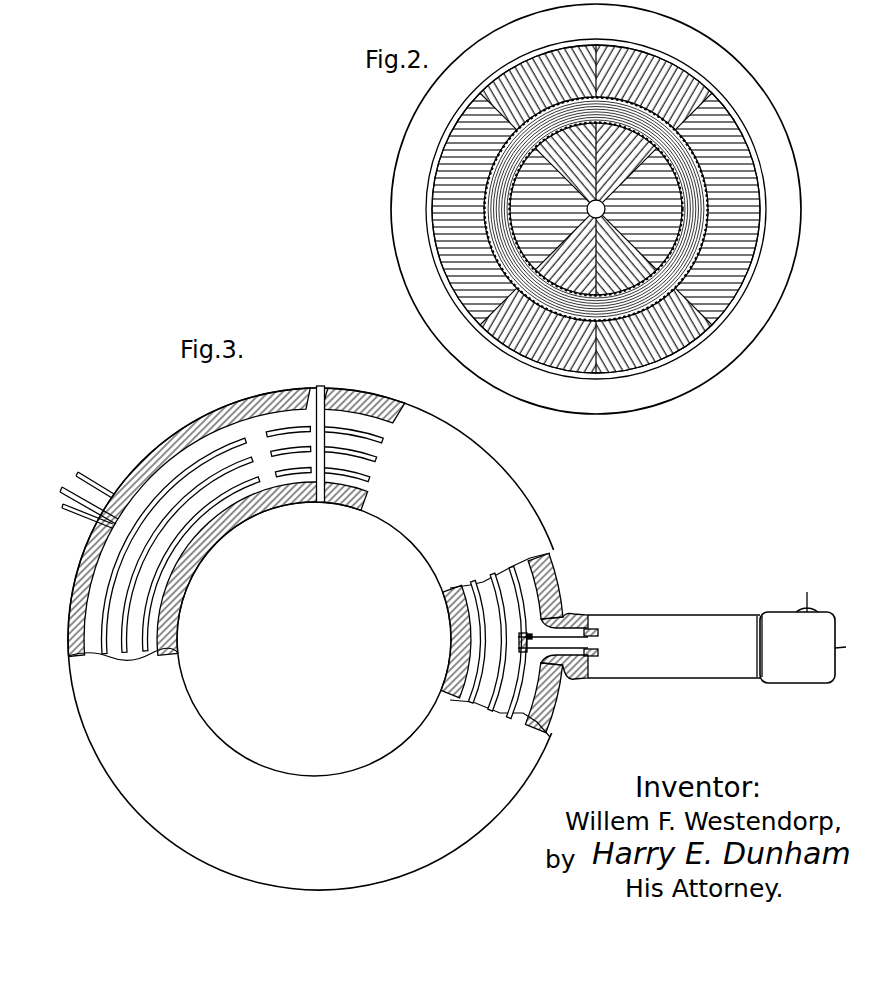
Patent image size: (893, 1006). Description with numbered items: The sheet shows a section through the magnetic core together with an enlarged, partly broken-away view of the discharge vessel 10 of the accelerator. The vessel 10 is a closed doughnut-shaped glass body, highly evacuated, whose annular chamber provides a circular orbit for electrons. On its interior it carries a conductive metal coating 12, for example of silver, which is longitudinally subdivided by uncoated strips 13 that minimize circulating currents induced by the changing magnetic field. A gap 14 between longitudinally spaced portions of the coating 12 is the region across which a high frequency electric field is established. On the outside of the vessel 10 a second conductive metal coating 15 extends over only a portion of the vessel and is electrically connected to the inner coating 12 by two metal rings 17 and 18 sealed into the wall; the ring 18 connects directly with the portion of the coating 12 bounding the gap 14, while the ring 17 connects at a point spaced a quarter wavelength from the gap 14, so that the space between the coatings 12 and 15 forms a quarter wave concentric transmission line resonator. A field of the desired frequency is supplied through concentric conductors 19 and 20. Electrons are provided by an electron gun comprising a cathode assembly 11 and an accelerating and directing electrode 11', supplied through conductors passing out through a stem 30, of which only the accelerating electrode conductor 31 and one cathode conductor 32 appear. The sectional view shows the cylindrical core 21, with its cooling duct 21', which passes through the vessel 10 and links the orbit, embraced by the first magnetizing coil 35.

In FIG. 3, the discharge vessel 10 is at (488, 466).
In FIG. 3, the cathode assembly 11 is at (546, 652).
In FIG. 3, the accelerating and directing electrode 11' is at (536, 627).
In FIG. 3, the conductive metal coating 12 is at (266, 482).
In FIG. 3, the uncoated strips 13 is at (305, 443).
In FIG. 3, the gap 14 is at (320, 398).
In FIG. 3, the second conductive metal coating 15 is at (163, 446).
In FIG. 3, the metal ring 17 is at (182, 608).
In FIG. 3, the metal ring 18 is at (337, 398).
In FIG. 3, the concentric conductor 19 is at (101, 486).
In FIG. 3, the concentric conductor 20 is at (70, 486).
In FIG. 2, the cylindrical core 21 is at (596, 209).
In FIG. 2, the duct 21' is at (596, 225).
In FIG. 3, the stem 30 is at (627, 623).
In FIG. 3, the accelerating electrode conductor 31 is at (805, 606).
In FIG. 3, the cathode conductor 32 is at (846, 647).
In FIG. 2, the first magnetizing means 35 is at (667, 135).